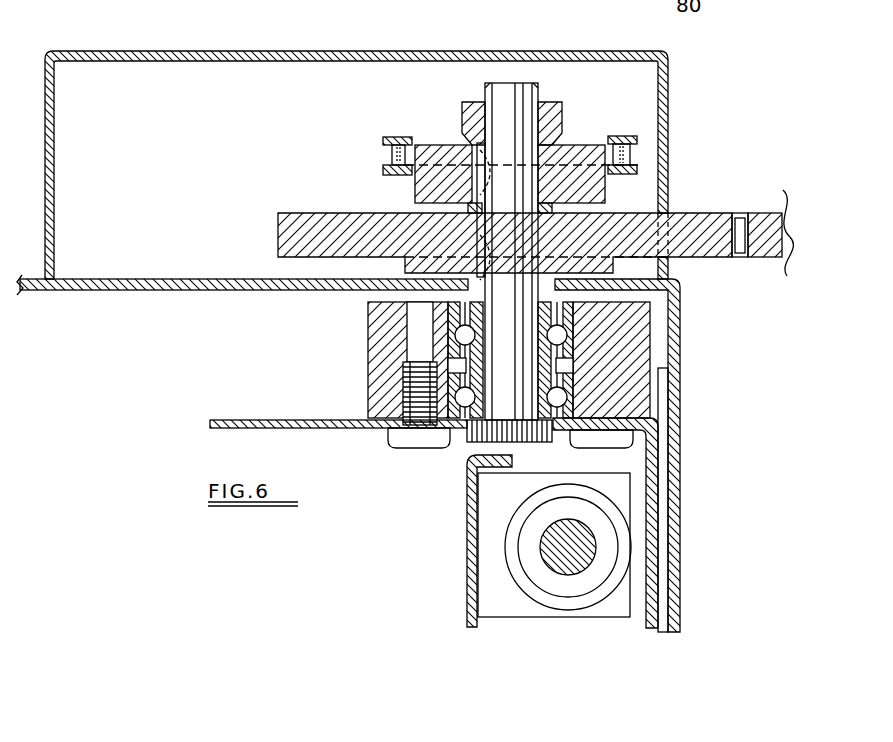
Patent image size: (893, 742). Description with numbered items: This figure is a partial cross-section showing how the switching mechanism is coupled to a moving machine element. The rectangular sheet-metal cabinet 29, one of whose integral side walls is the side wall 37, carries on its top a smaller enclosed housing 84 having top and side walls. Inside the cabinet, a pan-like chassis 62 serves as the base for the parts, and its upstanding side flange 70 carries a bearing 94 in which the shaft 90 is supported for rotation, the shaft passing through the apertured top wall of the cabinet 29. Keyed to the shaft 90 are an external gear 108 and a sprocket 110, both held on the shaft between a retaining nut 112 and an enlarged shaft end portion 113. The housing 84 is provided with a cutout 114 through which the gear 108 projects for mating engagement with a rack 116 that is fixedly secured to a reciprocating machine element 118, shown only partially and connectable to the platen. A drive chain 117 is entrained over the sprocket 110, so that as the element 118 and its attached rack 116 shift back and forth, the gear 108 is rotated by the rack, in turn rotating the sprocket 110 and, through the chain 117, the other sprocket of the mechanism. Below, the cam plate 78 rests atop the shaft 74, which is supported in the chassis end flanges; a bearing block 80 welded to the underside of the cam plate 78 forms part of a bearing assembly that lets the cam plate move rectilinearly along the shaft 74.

The housing 84 is at (392, 33).
The side wall 37 is at (278, 292).
The cabinet 29 is at (684, 446).
The chassis 62 is at (639, 633).
The external gear 108 is at (325, 216).
The cutout 114 is at (666, 201).
The rack 116 is at (768, 213).
The reciprocating machine element 118 is at (790, 260).
The sprocket 110 is at (433, 147).
The retaining nut 112 is at (557, 120).
The drive chain 117 is at (390, 154).
The shaft 90 is at (525, 98).
The bearing 94 is at (410, 345).
The side flange 70 is at (247, 420).
The enlarged shaft end portion 113 is at (472, 440).
The cam plate 78 is at (473, 547).
The bearing block 80 is at (528, 608).
The shaft 74 is at (572, 562).